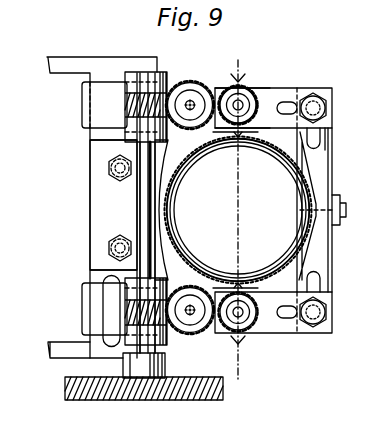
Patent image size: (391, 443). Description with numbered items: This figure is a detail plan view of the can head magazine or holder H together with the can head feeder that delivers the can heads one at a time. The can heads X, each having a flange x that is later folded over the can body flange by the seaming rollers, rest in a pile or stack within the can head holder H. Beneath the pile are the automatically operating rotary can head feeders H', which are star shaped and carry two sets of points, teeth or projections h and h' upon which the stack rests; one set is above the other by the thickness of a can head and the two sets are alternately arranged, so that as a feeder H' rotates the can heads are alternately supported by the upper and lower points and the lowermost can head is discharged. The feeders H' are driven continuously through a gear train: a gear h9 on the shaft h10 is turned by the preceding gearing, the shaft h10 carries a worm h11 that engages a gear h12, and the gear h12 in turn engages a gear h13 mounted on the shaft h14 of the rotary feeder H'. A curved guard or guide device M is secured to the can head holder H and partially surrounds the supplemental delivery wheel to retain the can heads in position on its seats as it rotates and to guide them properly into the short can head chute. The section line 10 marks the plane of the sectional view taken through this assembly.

The gear h9 is at (65, 386).
The shaft h10 is at (140, 196).
The worm h11 is at (128, 106).
The gear h12 is at (186, 80).
The gear h13 is at (260, 96).
The shaft h14 is at (240, 103).
The can head supporting points h' is at (227, 86).
The can head supporting points h is at (303, 180).
The gear 10 is at (253, 68).
The flange of the can head x is at (272, 153).
The can head X is at (238, 210).
The curved guard or guide device M is at (341, 197).
The can head holder H is at (134, 210).
The rotary can head feeder H' is at (210, 342).